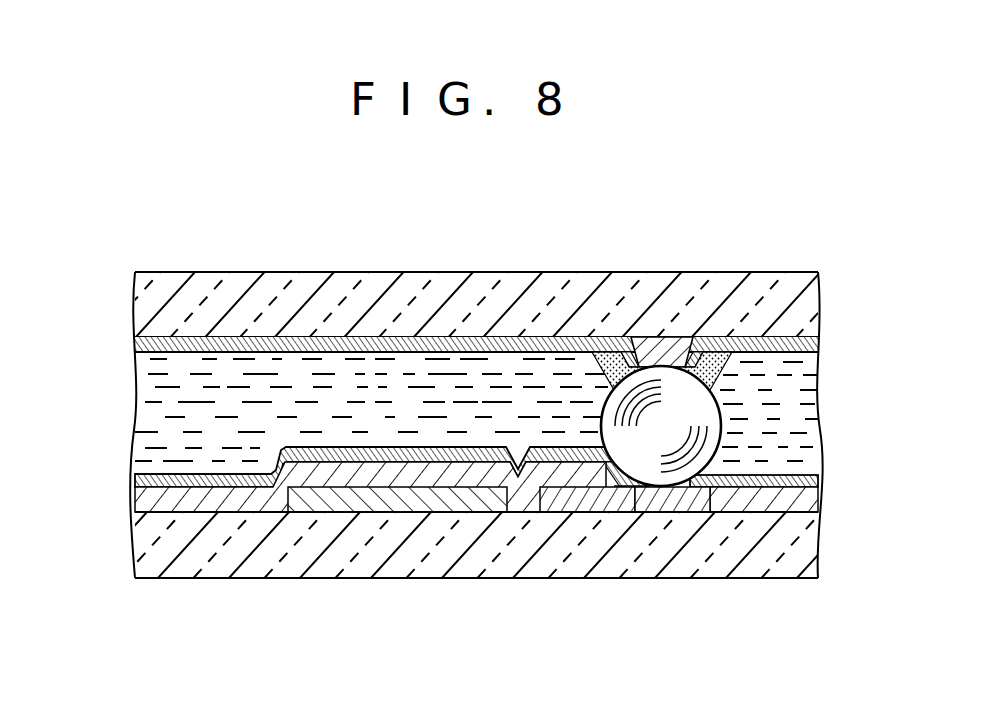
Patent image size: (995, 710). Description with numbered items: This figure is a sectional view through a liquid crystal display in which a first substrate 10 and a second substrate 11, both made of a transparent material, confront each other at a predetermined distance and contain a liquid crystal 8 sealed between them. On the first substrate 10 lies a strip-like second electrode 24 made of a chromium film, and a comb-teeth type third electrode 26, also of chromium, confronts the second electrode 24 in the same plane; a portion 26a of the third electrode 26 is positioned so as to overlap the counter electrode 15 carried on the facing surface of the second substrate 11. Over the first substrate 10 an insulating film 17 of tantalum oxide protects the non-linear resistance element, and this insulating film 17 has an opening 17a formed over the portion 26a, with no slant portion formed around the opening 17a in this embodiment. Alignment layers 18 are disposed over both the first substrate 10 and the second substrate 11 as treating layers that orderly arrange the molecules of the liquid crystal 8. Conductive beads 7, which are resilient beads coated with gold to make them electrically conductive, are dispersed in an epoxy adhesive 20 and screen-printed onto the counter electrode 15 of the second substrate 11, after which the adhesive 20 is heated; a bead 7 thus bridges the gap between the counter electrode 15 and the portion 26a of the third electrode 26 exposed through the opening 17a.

The conductive bead 7 is at (720, 415).
The liquid crystal 8 is at (138, 418).
The first substrate 10 is at (805, 538).
The second substrate 11 is at (808, 304).
The counter electrode 15 is at (674, 348).
The insulating film 17 is at (808, 498).
The opening 17a is at (633, 488).
The alignment layer 18 is at (808, 346).
The adhesive 20 is at (611, 356).
The second electrode 24 is at (391, 513).
The third electrode 26 is at (575, 513).
The portion of the third electrode 26a is at (675, 500).